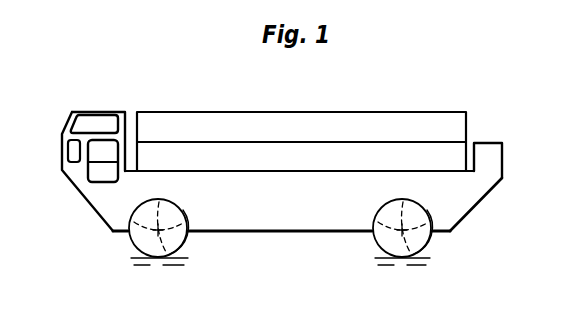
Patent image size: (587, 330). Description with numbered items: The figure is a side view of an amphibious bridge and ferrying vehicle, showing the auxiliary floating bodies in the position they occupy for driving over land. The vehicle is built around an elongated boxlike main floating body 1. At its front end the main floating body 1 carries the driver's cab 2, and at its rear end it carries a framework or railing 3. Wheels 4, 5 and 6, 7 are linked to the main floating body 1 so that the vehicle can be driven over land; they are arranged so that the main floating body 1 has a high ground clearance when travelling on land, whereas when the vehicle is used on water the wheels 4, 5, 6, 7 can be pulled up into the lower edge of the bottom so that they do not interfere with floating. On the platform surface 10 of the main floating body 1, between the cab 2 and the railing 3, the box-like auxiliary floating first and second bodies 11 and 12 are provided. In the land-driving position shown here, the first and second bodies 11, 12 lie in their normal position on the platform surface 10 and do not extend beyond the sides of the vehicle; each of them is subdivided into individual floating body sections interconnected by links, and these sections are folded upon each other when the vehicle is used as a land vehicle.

The main floating body 1 is at (279, 227).
The driver's cab 2 is at (63, 127).
The framework or railing 3 is at (497, 153).
The wheel 4 is at (158, 256).
The wheel 5 is at (402, 254).
The wheel 6 is at (153, 250).
The wheel 7 is at (405, 252).
The platform surface 10 is at (290, 171).
The first auxiliary floating body 11 is at (301, 116).
The second auxiliary floating body 12 is at (227, 110).